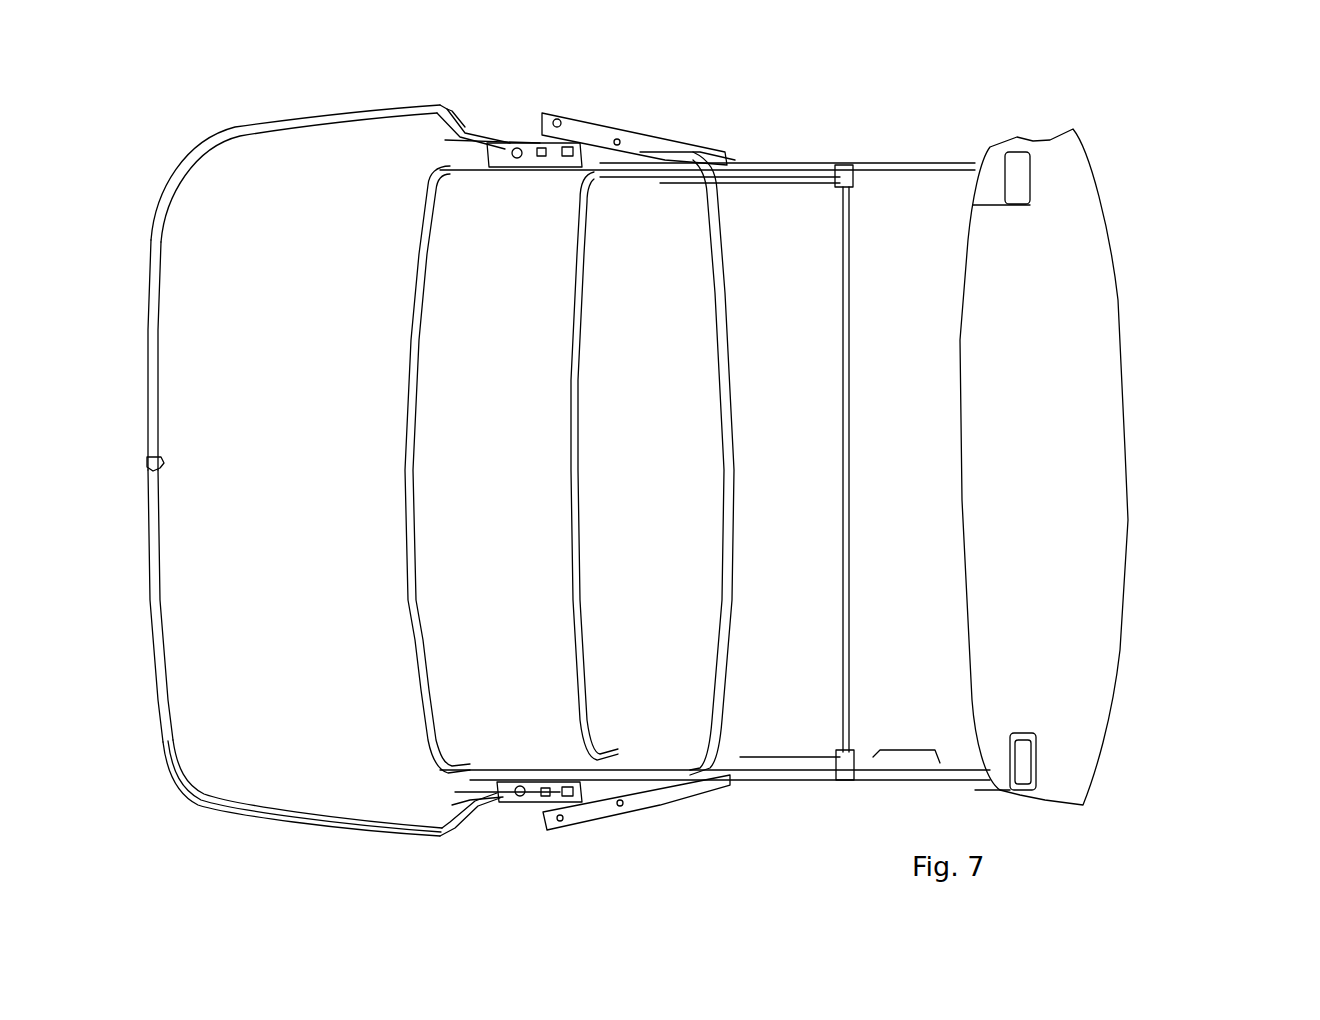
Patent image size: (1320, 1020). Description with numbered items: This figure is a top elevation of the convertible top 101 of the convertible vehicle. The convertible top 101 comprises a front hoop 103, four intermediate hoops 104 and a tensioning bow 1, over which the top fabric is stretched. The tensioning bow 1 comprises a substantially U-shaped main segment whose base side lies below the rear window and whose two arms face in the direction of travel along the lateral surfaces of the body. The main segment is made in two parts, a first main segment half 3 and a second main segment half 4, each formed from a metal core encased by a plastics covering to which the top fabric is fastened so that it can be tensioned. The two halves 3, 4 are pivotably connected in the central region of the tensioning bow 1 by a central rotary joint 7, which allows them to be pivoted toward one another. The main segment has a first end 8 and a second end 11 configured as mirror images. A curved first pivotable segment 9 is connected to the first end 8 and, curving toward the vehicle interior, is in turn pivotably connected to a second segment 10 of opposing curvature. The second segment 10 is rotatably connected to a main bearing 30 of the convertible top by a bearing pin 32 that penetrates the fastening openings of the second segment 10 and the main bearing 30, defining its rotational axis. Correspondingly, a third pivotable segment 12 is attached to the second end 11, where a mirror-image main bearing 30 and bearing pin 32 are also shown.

The tensioning bow 1 is at (240, 462).
The first main segment half 3 is at (155, 330).
The second main segment half 4 is at (159, 614).
The central rotary joint 7 is at (166, 462).
The first end 8 is at (377, 113).
The first pivotable segment 9 is at (437, 113).
The second segment 10 is at (467, 135).
The second end 11 is at (403, 832).
The third pivotable segment 12 is at (443, 832).
The main bearing 30 is at (553, 147).
The bearing pin 32 is at (498, 142).
The convertible top 101 is at (1152, 177).
The front hoop 103 is at (1100, 521).
The intermediate hoops 104 is at (416, 487).